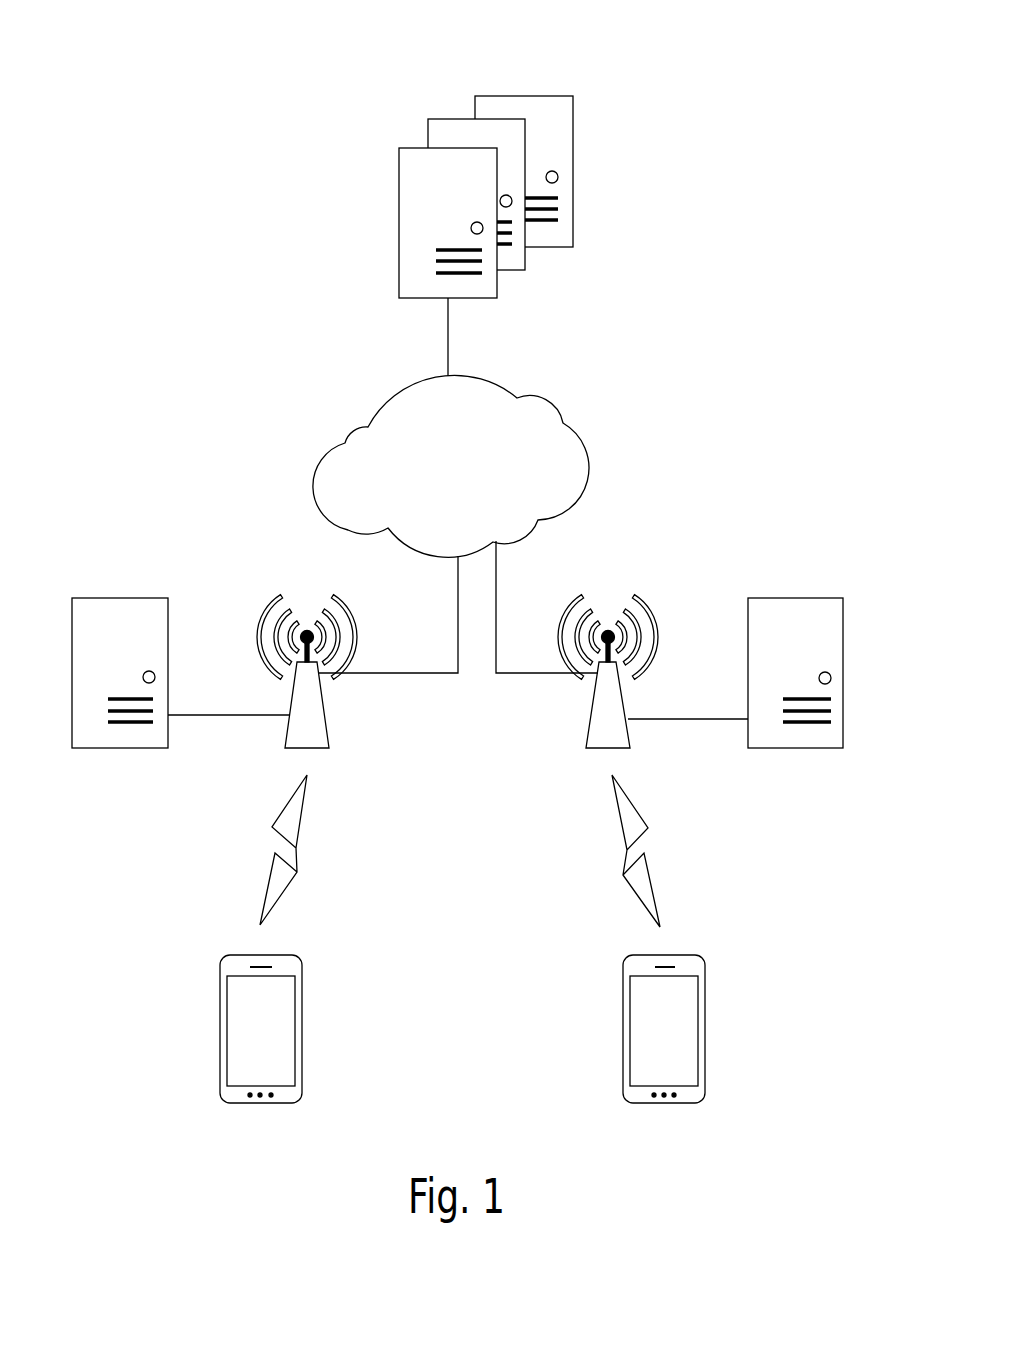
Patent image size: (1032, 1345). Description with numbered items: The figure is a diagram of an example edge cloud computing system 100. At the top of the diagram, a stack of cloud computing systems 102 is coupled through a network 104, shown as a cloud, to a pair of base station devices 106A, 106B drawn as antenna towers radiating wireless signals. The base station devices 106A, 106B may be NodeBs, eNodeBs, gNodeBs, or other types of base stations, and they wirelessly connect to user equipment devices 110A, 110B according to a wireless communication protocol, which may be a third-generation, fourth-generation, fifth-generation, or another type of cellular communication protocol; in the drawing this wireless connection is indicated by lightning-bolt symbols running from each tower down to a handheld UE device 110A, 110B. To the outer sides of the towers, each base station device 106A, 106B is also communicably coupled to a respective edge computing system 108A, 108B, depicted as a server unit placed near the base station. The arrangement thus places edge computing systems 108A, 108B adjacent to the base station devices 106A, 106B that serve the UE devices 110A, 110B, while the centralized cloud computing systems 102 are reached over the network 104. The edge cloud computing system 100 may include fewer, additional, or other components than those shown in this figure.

The edge cloud computing system 100 is at (812, 55).
The cloud computing systems 102 is at (402, 110).
The network 104 is at (451, 466).
The base station device 106A is at (329, 737).
The base station device 106B is at (586, 738).
The edge computing system 108A is at (138, 598).
The edge computing system 108B is at (790, 598).
The user equipment device 110A is at (225, 957).
The user equipment device 110B is at (702, 958).